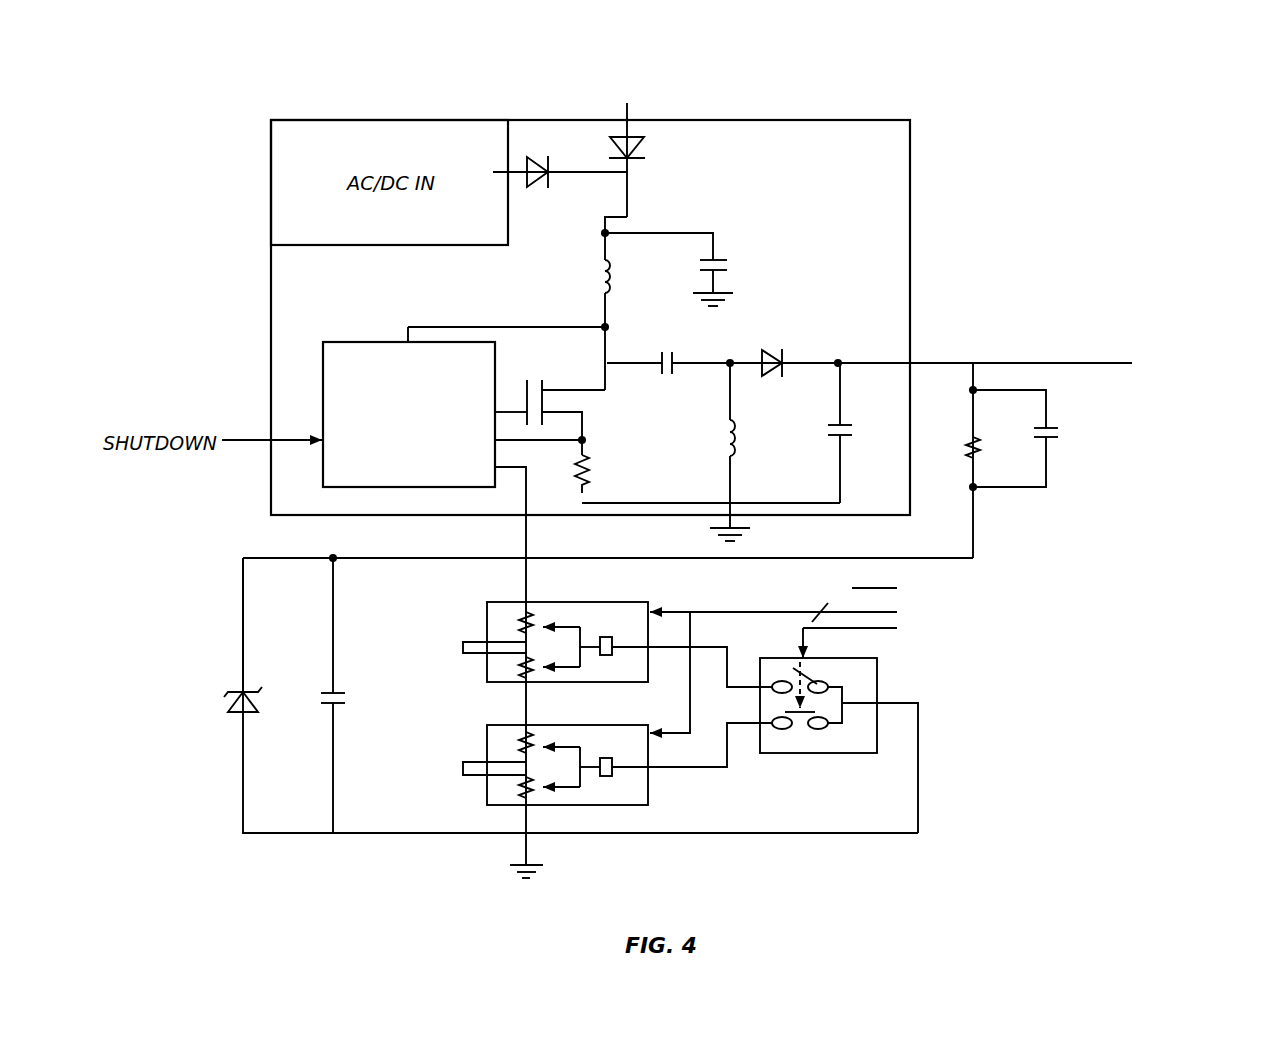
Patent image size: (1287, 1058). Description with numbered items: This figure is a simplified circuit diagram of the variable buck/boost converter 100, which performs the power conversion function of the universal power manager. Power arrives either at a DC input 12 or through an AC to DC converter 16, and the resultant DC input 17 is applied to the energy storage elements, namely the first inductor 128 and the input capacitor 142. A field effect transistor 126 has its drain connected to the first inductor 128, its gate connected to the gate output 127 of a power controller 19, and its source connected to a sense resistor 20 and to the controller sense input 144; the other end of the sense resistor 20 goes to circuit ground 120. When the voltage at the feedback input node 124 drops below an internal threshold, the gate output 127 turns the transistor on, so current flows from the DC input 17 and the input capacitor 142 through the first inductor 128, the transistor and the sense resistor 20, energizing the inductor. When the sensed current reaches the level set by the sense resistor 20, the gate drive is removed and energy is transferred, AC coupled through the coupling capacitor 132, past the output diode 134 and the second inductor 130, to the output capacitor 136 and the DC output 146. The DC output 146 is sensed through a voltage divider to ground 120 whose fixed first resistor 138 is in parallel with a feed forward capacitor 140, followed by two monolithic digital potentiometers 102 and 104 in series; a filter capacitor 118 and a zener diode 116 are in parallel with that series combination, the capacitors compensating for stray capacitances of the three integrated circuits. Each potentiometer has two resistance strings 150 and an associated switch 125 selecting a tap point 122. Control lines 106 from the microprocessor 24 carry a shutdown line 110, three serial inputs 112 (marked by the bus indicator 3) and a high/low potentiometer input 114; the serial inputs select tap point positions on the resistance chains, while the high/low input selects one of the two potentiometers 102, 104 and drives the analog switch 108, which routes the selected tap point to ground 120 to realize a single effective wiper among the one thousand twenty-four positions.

The variable buck/boost converter 100 is at (962, 124).
The DC input 12 is at (626, 113).
The AC to DC converter 16 is at (535, 162).
The DC input 17 is at (723, 205).
The power controller 19 is at (422, 481).
The sense resistor 20 is at (707, 461).
The microprocessor 24 is at (1253, 636).
The serial inputs 3 is at (820, 599).
The monolithic digital potentiometer DP1 102 is at (644, 631).
The monolithic digital potentiometer DP2 104 is at (644, 754).
The control lines from microprocessor 106 is at (805, 625).
The analog switch 108 is at (839, 745).
The shutdown line 110 is at (1022, 585).
The serial inputs 112 is at (1006, 618).
The H/L potentiometer input 114 is at (980, 640).
The zener diode D2 116 is at (216, 635).
The filter capacitor C2 118 is at (320, 695).
The circuit ground 120 is at (712, 308).
The tap point 122 is at (562, 667).
The feedback input node 124 is at (485, 666).
The switch 125 is at (668, 672).
The field effect transistor 126 is at (550, 396).
The gate output 127 is at (434, 411).
The inductor L1 128 is at (569, 303).
The inductor L2 130 is at (756, 445).
The coupling capacitor Cc 132 is at (758, 330).
The diode DI 134 is at (789, 349).
The output capacitor 136 is at (874, 433).
The fixed resistor R1 138 is at (1016, 452).
The feed forward capacitor C1 140 is at (1048, 438).
The input capacitor Cin 142 is at (697, 255).
The sense input 144 is at (424, 440).
The DC output 146 is at (717, 445).
The resistance strings 150 is at (519, 665).